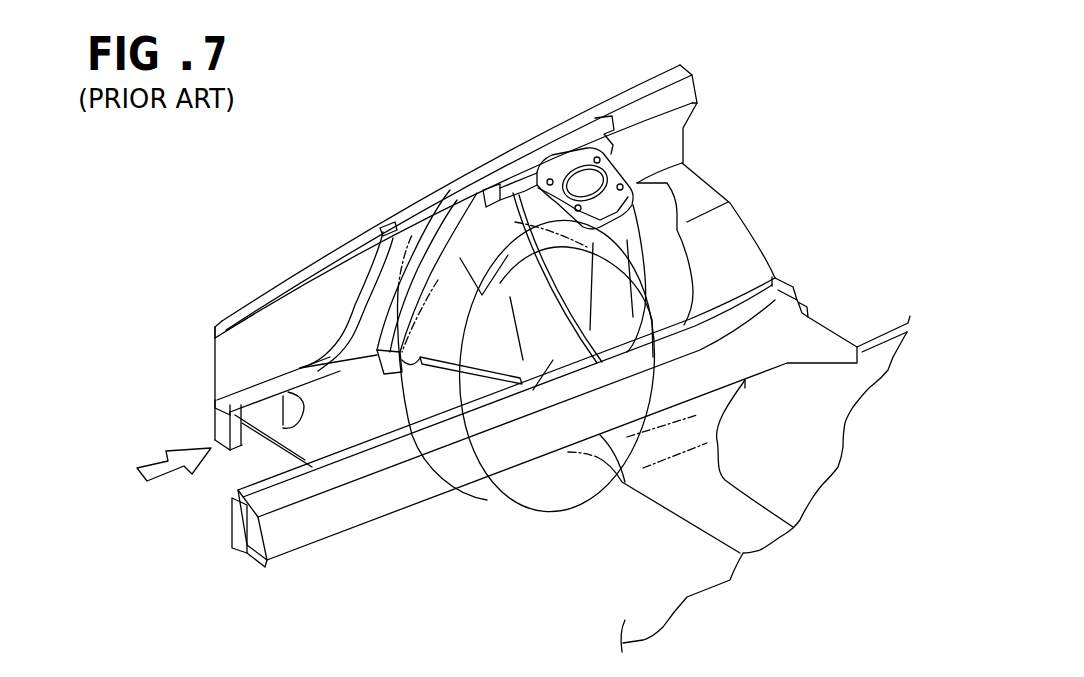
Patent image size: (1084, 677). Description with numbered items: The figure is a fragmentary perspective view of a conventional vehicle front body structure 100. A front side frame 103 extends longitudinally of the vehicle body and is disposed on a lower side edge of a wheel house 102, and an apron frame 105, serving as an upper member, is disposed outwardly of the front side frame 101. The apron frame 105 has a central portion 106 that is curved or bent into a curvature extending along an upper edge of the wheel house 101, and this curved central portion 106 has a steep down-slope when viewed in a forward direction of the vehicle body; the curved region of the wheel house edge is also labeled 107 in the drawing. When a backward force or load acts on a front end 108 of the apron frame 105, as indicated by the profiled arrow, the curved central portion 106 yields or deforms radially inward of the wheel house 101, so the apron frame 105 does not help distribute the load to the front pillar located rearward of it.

The vehicle front body structure 100 is at (378, 130).
The front side frame 101 is at (478, 245).
The wheel house 102 is at (540, 420).
The front side frame 103 is at (413, 498).
The apron frame 105 is at (576, 122).
The central portion 106 is at (377, 290).
The wheel arch flange 107 is at (430, 278).
The front end 108 is at (245, 393).